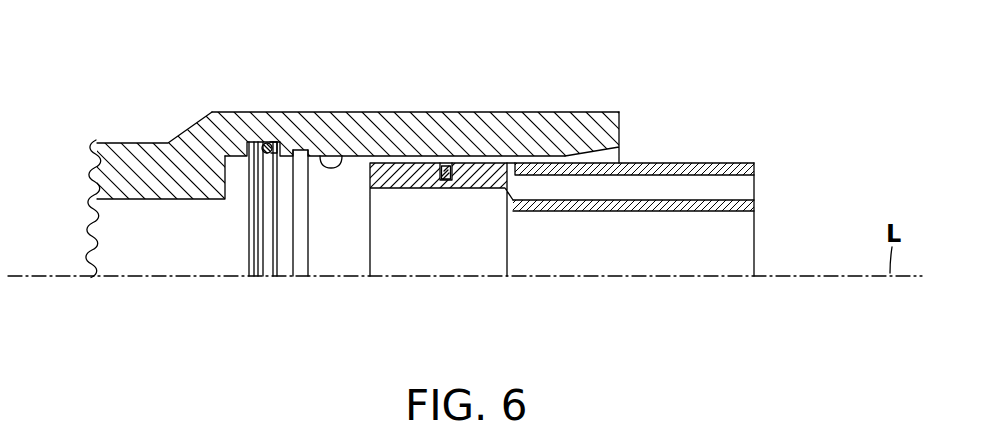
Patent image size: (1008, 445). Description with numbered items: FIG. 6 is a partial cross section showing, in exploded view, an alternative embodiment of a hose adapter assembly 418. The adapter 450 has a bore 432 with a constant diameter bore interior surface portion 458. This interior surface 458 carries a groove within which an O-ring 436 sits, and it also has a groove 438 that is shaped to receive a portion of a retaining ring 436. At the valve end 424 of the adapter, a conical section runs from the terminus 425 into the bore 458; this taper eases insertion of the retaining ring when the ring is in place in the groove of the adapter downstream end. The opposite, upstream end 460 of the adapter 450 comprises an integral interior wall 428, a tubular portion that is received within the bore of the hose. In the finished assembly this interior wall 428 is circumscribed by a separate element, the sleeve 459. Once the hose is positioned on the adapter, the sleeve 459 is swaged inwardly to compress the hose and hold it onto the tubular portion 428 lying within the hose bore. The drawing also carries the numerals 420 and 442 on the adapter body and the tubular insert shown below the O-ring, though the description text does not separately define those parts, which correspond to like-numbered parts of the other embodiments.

The assembly 418 is at (494, 72).
The housing body 420 is at (277, 103).
The valve end 424 is at (567, 111).
The terminus 425 is at (621, 118).
The interior wall 428 is at (737, 200).
The bore 432 is at (106, 240).
The O-ring 436 is at (446, 165).
The groove 438 is at (308, 258).
The tubular insert 442 is at (420, 278).
The adapter 450 is at (683, 149).
The bore interior surface portion 458 is at (344, 160).
The sleeve 459 is at (693, 162).
The upstream end 460 is at (745, 238).